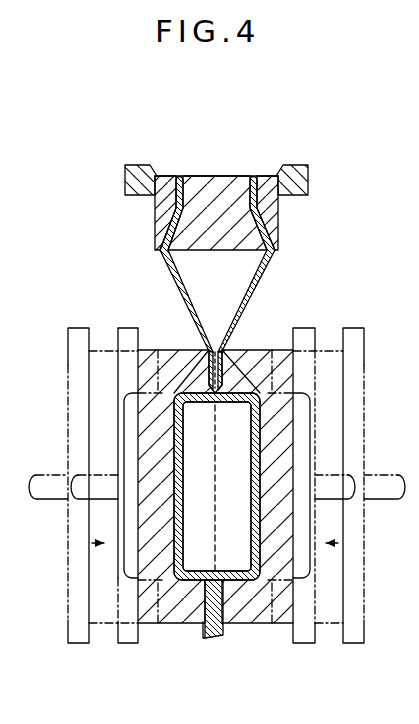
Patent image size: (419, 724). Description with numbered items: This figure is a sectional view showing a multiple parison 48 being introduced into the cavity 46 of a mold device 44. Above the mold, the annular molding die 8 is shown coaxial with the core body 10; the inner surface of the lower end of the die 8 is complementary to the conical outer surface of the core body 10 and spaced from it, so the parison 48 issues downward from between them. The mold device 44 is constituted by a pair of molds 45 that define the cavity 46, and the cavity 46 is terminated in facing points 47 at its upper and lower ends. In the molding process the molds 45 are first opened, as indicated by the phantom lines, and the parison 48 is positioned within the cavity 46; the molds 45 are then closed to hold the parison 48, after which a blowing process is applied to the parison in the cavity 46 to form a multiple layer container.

The annular molding die 8 is at (275, 190).
The core body 10 is at (214, 190).
The mold device 44 is at (322, 388).
The molds 45 is at (177, 357).
The cavity 46 is at (232, 518).
The facing points 47 is at (218, 392).
The parison 48 is at (166, 509).